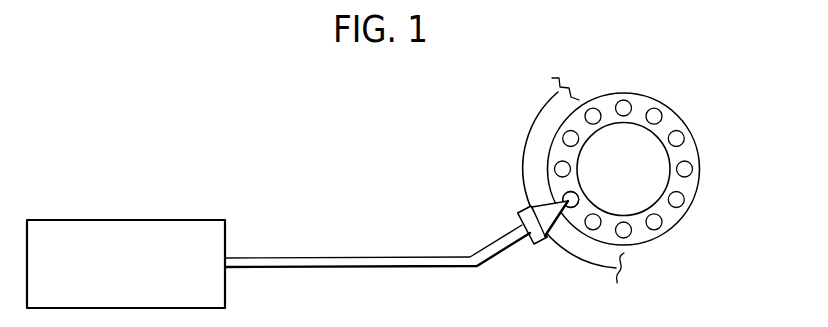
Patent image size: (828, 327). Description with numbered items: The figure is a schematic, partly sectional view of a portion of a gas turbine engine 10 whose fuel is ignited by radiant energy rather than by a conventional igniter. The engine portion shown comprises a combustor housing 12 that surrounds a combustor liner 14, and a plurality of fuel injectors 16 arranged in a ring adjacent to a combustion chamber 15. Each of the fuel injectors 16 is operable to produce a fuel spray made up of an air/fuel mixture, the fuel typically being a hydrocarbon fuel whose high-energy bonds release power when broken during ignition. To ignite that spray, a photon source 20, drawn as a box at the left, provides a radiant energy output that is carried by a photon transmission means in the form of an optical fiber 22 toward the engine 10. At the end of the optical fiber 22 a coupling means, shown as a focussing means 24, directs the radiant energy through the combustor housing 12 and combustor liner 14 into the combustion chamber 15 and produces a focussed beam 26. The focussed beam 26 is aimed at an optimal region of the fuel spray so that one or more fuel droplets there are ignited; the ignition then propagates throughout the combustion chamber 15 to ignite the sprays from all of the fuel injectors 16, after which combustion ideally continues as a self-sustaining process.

The gas turbine engine 10 is at (626, 160).
The combustor housing 12 is at (540, 122).
The combustor liner 14 is at (599, 93).
The combustion chamber 15 is at (632, 192).
The fuel injectors 16 is at (677, 137).
The photon source 20 is at (113, 220).
The optical fiber 22 is at (352, 257).
The focussing means 24 is at (539, 246).
The focussed beam 26 is at (566, 198).